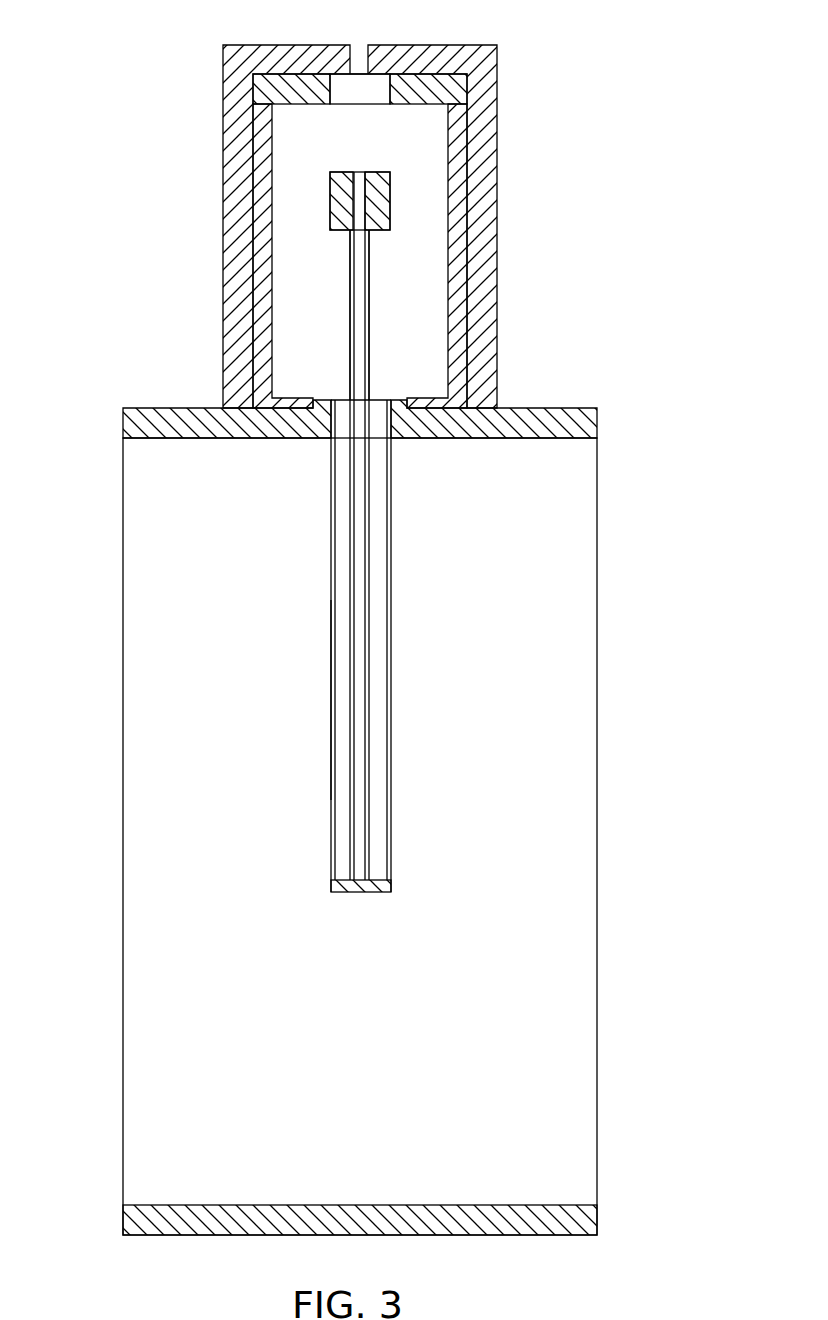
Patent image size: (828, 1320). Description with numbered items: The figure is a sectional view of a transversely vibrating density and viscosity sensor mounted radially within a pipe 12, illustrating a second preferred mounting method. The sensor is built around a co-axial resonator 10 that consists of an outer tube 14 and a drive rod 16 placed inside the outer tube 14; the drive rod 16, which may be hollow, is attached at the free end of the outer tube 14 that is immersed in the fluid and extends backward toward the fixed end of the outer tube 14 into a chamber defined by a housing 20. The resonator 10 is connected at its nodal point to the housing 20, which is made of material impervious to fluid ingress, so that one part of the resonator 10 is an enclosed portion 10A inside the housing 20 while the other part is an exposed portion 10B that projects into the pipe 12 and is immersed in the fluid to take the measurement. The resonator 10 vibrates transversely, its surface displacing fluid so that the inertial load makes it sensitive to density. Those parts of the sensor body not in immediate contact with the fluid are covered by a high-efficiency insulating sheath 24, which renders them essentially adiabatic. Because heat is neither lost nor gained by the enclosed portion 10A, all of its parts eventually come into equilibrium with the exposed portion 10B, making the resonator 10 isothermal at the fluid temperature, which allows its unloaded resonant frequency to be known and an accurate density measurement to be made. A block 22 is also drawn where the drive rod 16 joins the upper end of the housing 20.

The resonator 10 is at (484, 566).
The enclosed portion 10A is at (375, 297).
The exposed portion 10B is at (331, 695).
The pipe 12 is at (573, 408).
The outer tube 14 is at (375, 693).
The drive rod 16 is at (359, 755).
The housing 20 is at (558, 52).
The block / holder 22 is at (330, 187).
The insulating sheath 24 is at (497, 177).